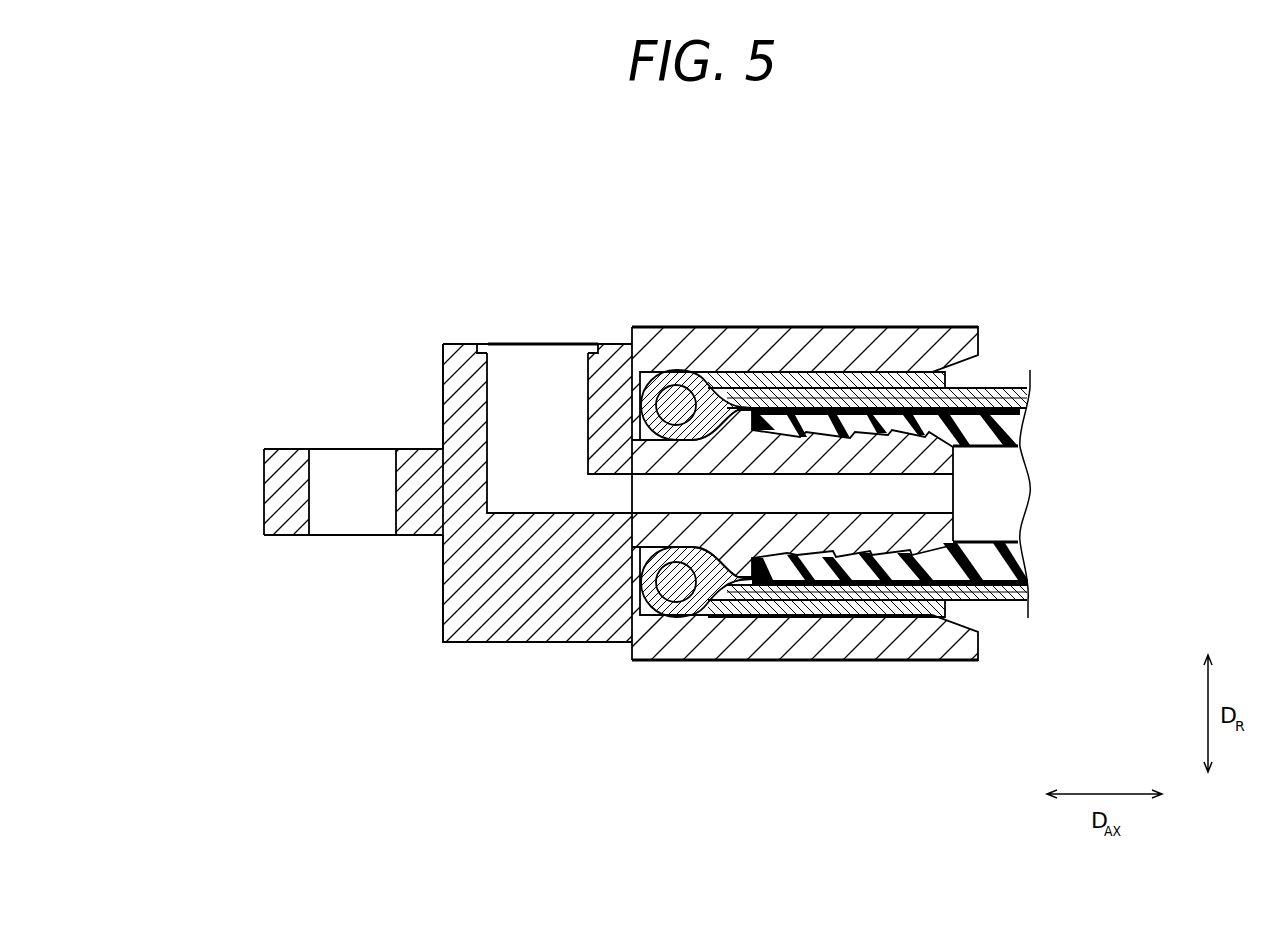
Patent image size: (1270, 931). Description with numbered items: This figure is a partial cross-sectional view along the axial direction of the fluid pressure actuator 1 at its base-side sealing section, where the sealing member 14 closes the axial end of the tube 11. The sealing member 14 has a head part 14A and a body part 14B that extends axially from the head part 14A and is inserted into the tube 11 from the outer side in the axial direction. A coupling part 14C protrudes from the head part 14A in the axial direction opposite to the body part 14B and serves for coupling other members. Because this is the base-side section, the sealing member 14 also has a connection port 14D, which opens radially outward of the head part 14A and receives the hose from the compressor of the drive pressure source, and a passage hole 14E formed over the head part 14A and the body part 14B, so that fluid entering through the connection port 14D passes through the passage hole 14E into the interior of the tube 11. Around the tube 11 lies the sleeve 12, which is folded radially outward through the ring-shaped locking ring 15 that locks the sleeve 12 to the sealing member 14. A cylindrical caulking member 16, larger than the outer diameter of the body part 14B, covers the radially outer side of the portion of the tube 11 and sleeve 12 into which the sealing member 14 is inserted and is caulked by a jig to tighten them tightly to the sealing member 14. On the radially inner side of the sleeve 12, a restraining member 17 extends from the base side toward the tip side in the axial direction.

The fluid pressure actuator 1 is at (989, 224).
The tube 11 is at (1003, 433).
The sleeve 12 is at (950, 384).
The sealing member 14 is at (411, 417).
The head part 14A is at (458, 346).
The body part 14B is at (885, 440).
The coupling part 14C is at (283, 497).
The connection port 14D is at (525, 342).
The passage hole 14E is at (534, 480).
The locking ring 15 is at (690, 602).
The caulking member 16 is at (814, 328).
The restraining member 17 is at (1010, 449).